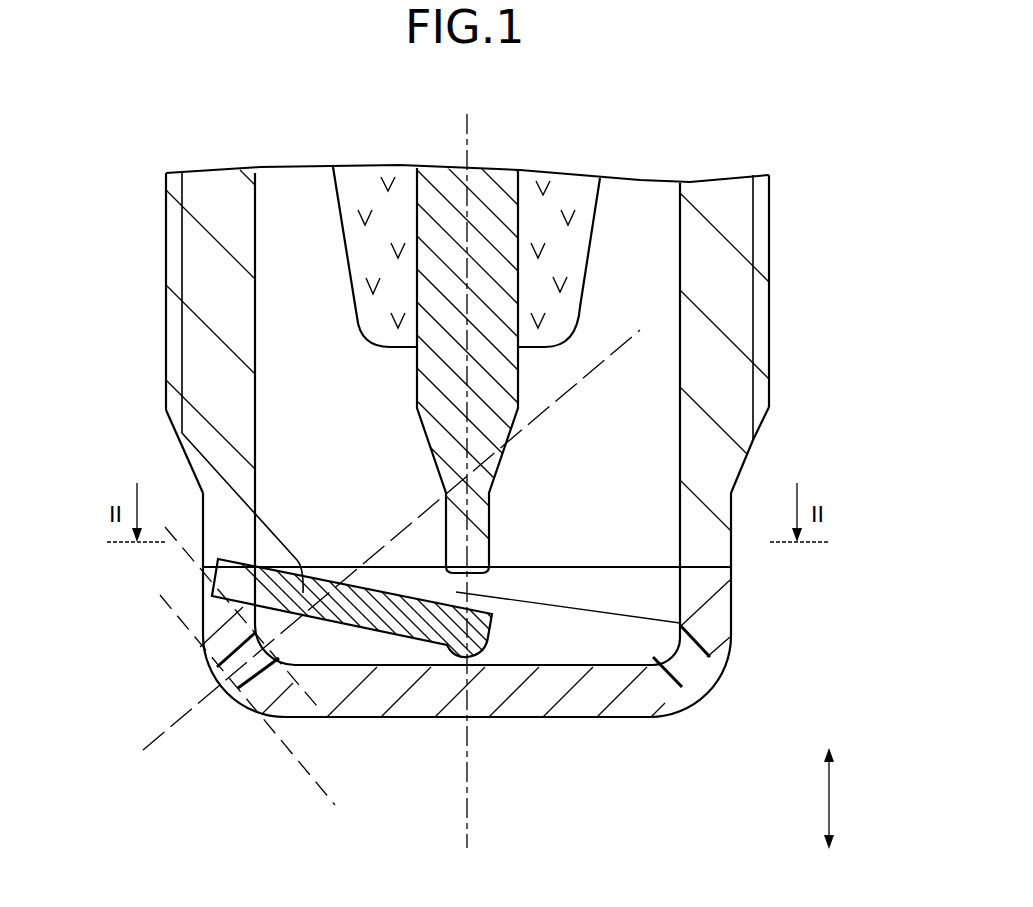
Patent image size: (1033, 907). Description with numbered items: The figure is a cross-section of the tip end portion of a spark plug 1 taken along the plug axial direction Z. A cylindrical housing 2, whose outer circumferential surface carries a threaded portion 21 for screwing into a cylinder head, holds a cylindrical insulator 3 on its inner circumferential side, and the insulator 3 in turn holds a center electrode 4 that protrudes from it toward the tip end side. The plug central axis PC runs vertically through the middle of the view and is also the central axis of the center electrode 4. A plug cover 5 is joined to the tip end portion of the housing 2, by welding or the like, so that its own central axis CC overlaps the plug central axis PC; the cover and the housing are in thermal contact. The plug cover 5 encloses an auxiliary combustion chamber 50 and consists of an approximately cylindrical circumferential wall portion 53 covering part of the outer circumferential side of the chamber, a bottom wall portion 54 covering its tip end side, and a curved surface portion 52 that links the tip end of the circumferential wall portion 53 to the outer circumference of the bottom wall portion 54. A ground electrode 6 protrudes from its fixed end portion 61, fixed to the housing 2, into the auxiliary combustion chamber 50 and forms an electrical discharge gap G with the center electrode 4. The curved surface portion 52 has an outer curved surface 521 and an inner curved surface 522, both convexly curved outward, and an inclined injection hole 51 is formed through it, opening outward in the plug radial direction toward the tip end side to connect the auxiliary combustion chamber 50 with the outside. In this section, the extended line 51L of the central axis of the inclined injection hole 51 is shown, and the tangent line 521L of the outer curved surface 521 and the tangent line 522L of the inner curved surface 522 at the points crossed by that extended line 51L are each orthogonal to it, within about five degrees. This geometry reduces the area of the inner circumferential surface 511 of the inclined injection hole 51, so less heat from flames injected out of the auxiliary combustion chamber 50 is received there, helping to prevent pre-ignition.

The spark plug 1 is at (142, 220).
The housing 2 is at (709, 217).
The threaded portion 21 is at (761, 190).
The insulator 3 is at (552, 213).
The center electrode 4 is at (447, 195).
The plug cover 5 is at (623, 693).
The auxiliary combustion chamber 50 is at (560, 525).
The inclined injection hole 51 is at (220, 662).
The inner circumferential surface 511 is at (253, 688).
The extended line 51L is at (366, 551).
The curved surface portion 52 is at (198, 648).
The outer curved surface 521 is at (240, 680).
The inner curved surface 522 is at (290, 635).
The tangent line 521L is at (335, 805).
The tangent line 522L is at (322, 712).
The circumferential wall portion 53 is at (705, 592).
The bottom wall portion 54 is at (543, 695).
The ground electrode 6 is at (237, 560).
The fixed end portion 61 is at (222, 556).
The electrical discharge gap G is at (680, 623).
The plug central axis PC is at (467, 467).
The central axis of the plug cover CC is at (468, 863).
The plug axial direction Z is at (841, 798).